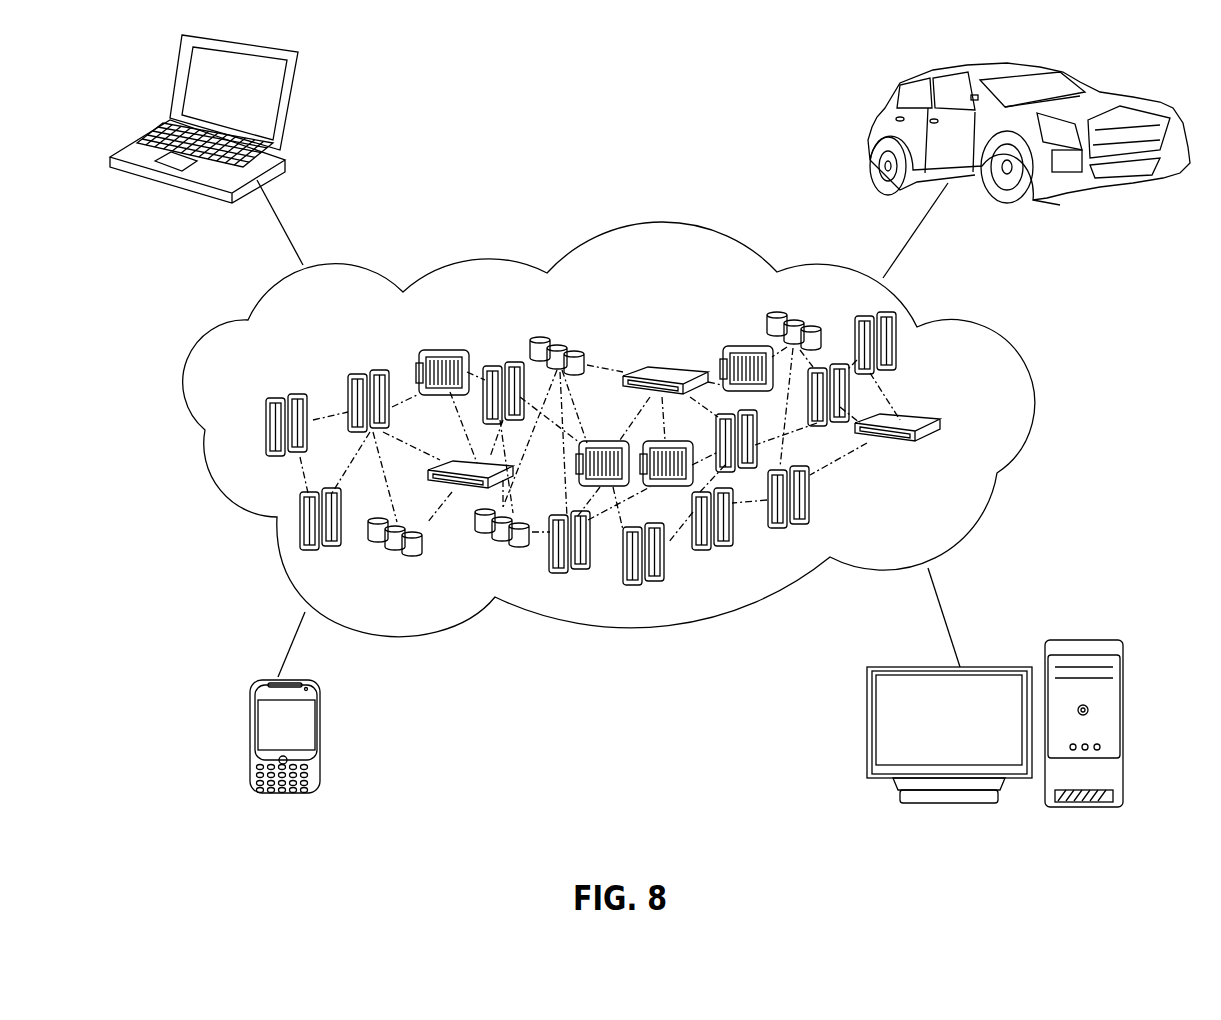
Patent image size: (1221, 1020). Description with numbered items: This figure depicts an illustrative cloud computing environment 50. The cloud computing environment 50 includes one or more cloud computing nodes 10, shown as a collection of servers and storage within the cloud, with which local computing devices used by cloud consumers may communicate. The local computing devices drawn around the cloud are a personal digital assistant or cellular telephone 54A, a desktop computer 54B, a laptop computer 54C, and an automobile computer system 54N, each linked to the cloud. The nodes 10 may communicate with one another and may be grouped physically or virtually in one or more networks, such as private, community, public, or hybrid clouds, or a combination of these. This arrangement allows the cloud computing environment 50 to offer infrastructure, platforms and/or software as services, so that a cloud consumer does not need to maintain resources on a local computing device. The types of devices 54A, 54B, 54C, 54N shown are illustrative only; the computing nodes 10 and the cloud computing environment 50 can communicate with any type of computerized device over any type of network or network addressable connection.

The cloud computing environment 50 is at (1005, 342).
The cloud computing node 10 is at (982, 426).
The personal digital assistant (PDA) or cellular telephone 54A is at (250, 742).
The desktop computer 54B is at (1088, 640).
The laptop computer 54C is at (288, 107).
The automobile computer system 54N is at (873, 112).